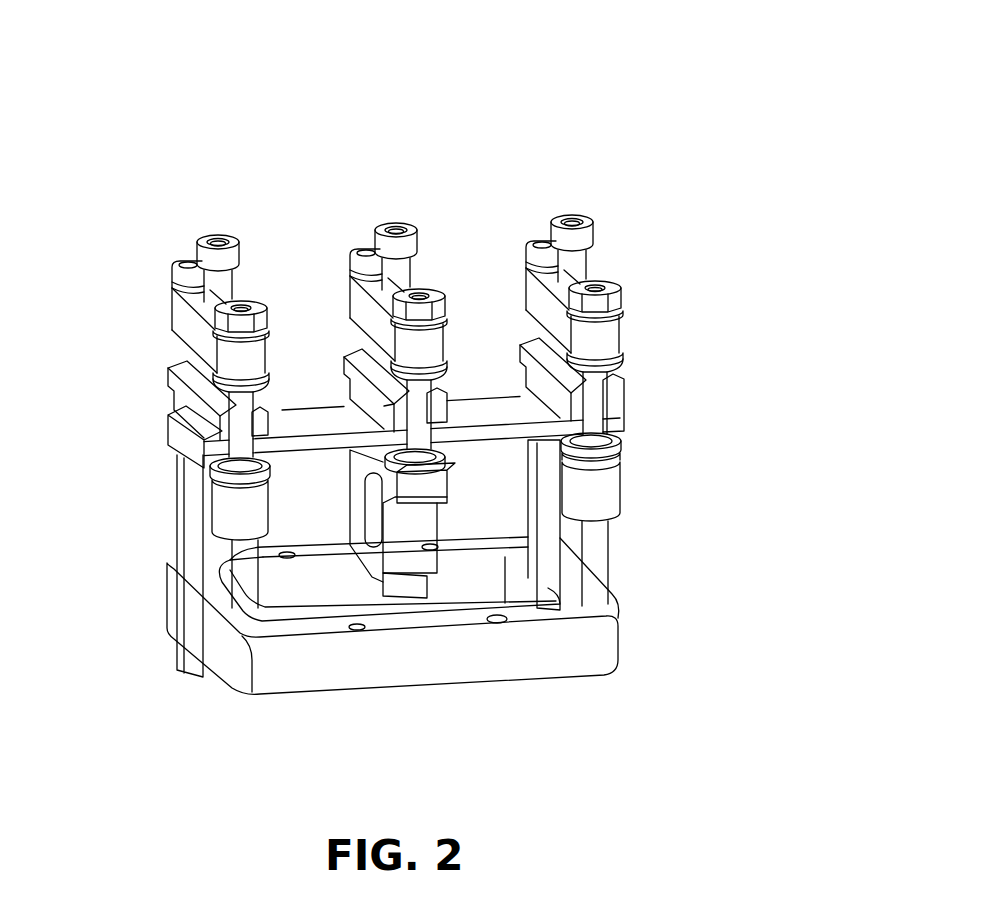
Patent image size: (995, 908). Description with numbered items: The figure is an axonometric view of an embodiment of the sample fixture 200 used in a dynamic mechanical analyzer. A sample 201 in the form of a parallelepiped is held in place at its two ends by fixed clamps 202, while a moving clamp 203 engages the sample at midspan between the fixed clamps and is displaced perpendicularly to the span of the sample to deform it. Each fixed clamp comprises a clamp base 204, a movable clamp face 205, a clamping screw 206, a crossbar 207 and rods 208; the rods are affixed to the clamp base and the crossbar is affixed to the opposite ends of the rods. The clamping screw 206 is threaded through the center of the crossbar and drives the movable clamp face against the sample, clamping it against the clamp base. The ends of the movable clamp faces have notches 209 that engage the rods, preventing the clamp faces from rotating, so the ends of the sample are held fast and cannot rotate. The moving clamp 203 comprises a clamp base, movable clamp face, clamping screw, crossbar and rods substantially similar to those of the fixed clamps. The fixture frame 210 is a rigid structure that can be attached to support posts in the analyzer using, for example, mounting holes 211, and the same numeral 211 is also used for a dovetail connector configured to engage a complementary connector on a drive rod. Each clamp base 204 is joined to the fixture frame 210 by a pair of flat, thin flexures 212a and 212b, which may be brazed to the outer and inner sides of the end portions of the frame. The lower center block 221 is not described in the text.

The sample fixture 200 is at (561, 98).
The sample 201 is at (502, 403).
The fixed clamps 202 is at (150, 326).
The moving clamp 203 is at (355, 198).
The clamp base 204 is at (620, 480).
The movable clamp face 205 is at (178, 402).
The clamping screw 206 is at (190, 221).
The crossbar 207 is at (657, 317).
The rods 208 is at (647, 386).
The notches 209 is at (625, 433).
The fixture frame 210 is at (620, 637).
The mounting holes 211 is at (510, 622).
The flexure 212a is at (187, 530).
The flexure 212b is at (248, 585).
The center stop block 221 is at (403, 598).